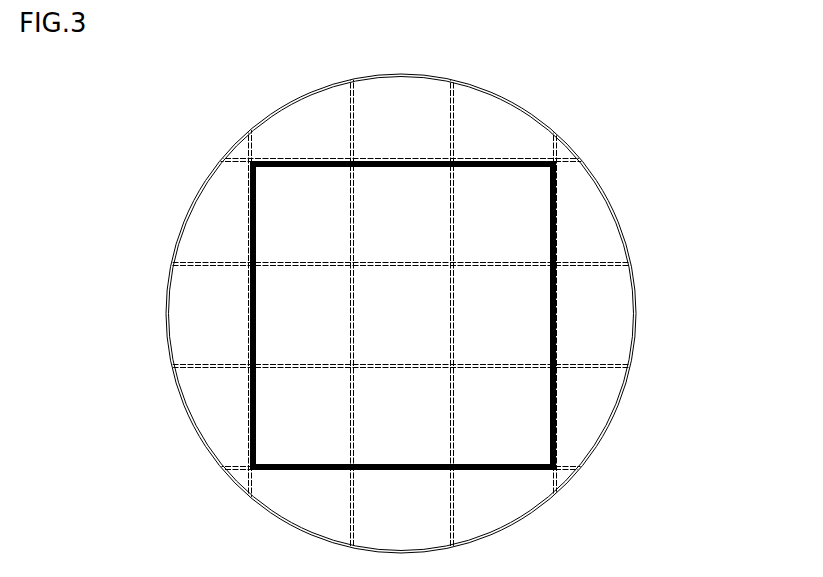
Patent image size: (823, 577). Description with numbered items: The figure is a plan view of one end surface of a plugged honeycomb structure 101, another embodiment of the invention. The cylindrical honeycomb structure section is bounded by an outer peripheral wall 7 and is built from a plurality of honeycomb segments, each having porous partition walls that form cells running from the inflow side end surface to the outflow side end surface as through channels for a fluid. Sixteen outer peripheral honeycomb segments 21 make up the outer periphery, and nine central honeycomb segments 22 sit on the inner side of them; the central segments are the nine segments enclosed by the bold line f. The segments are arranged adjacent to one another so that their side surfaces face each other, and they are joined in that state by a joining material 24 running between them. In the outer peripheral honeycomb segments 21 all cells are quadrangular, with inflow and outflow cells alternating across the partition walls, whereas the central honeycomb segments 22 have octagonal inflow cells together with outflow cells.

The plugged honeycomb structure 101 is at (751, 65).
The outer peripheral wall 7 is at (617, 410).
The outer peripheral honeycomb segment 21 is at (502, 128).
The central honeycomb segment 22 is at (520, 205).
The bold line f is at (556, 315).
The joining material 24 is at (592, 366).